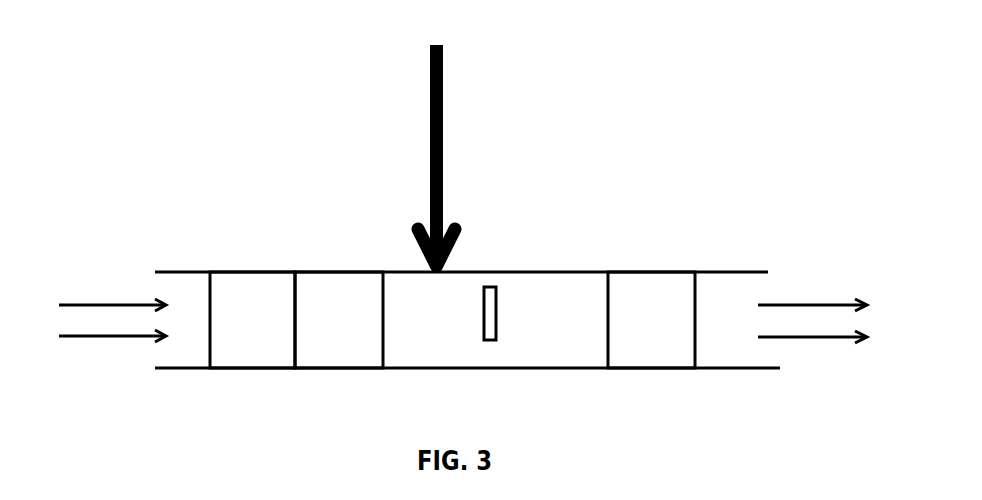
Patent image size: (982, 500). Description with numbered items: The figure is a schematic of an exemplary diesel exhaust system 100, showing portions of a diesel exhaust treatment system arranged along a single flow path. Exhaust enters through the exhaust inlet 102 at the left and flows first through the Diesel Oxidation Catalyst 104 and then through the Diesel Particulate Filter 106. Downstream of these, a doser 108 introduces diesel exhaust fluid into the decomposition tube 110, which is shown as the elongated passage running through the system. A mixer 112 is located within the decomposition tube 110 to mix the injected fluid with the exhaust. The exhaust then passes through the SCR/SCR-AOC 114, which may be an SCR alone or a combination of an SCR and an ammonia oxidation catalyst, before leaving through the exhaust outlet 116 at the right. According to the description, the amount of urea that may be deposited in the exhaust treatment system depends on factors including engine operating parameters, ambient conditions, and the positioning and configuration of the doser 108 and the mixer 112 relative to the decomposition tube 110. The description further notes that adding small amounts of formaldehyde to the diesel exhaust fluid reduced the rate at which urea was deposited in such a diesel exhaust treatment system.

The diesel exhaust system 100 is at (253, 142).
The exhaust inlet 102 is at (147, 278).
The Diesel Oxidation Catalyst 104 is at (252, 320).
The Diesel Particulate Filter 106 is at (339, 320).
The doser 108 is at (430, 168).
The decomposition tube 110 is at (468, 358).
The mixer 112 is at (497, 313).
The SCR/SCR-AOC 114 is at (651, 320).
The exhaust outlet 116 is at (768, 292).